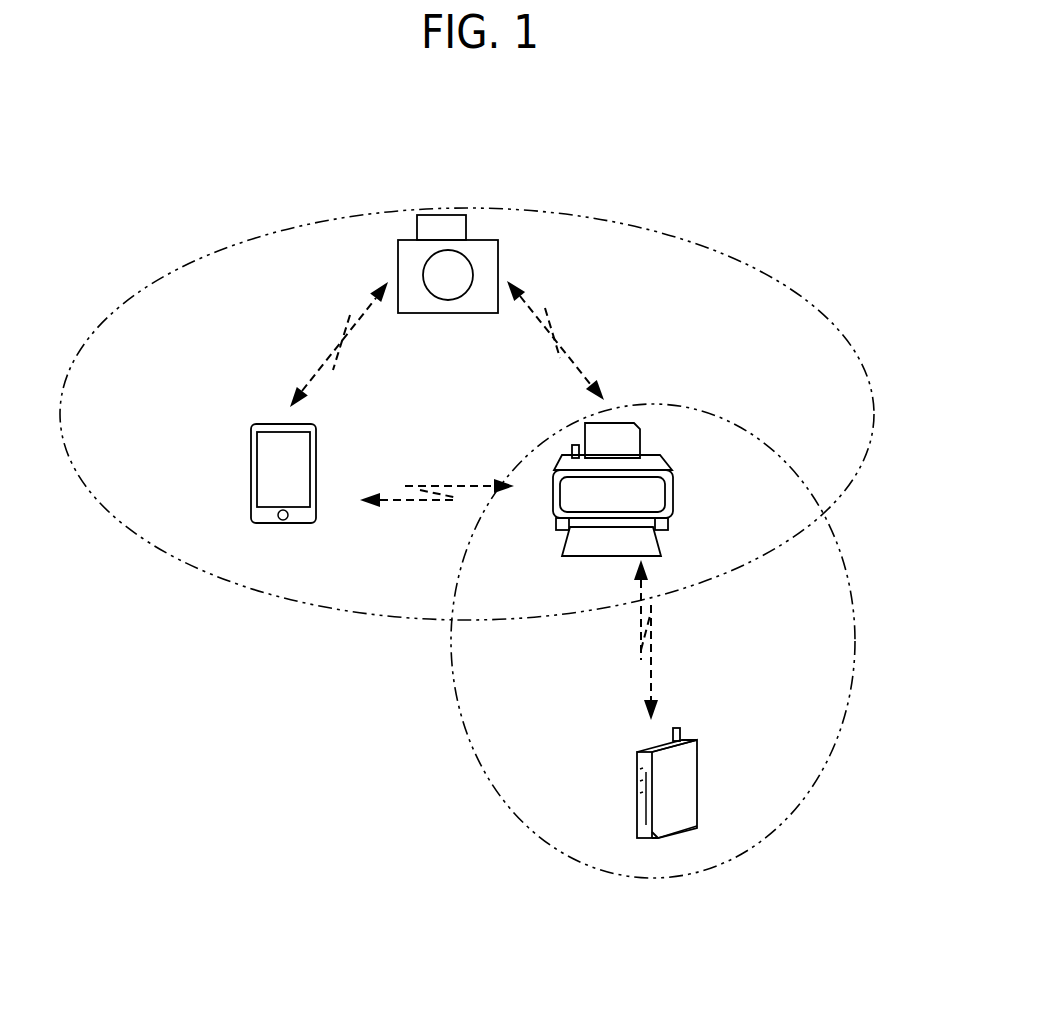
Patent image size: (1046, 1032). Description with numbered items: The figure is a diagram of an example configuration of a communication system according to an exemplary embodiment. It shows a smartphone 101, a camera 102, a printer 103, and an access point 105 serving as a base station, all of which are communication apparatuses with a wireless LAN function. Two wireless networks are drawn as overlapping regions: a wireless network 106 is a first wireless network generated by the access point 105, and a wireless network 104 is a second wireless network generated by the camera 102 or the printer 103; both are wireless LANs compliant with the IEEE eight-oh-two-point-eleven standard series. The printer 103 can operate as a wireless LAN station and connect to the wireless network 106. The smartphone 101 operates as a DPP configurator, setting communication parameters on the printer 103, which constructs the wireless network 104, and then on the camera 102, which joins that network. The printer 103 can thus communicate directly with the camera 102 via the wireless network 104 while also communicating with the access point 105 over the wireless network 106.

The smartphone 101 is at (250, 466).
The camera 102 is at (498, 262).
The printer 103 is at (665, 462).
The wireless network 104 is at (874, 434).
The access point 105 is at (635, 784).
The wireless network 106 is at (458, 713).